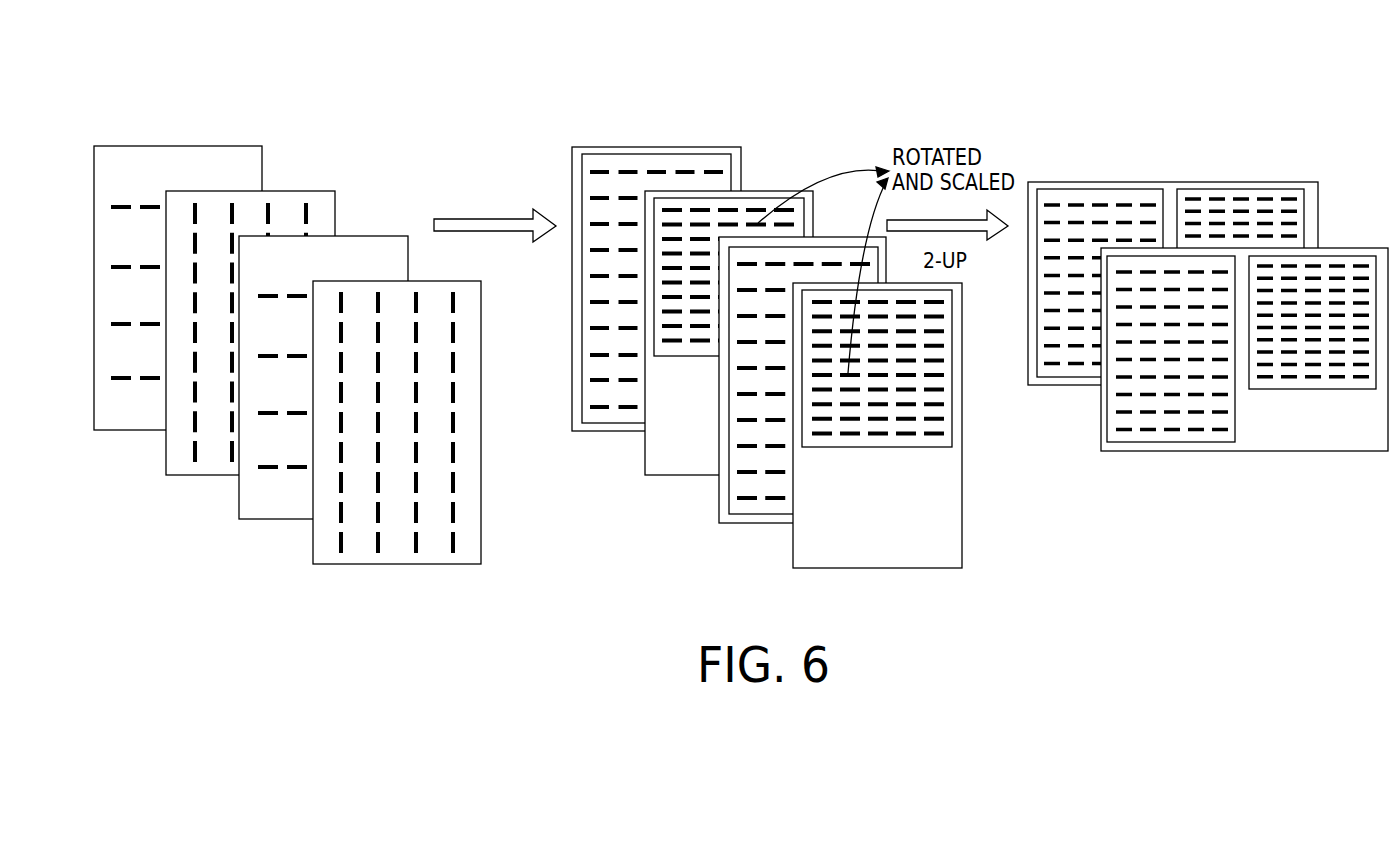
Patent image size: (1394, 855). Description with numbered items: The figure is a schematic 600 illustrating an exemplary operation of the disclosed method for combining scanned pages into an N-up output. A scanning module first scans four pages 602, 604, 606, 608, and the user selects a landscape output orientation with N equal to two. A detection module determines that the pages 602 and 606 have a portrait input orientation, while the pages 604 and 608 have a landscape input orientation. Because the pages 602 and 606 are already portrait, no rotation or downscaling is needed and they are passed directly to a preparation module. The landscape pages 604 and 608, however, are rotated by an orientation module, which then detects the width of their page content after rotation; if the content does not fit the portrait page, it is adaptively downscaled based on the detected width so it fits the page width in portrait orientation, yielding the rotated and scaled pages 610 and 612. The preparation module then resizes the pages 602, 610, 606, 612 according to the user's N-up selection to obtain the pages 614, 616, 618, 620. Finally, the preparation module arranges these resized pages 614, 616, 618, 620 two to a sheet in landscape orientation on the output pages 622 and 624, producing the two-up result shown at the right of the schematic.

The schematic 600 is at (825, 95).
The page 602 is at (122, 431).
The page 604 is at (195, 475).
The page 606 is at (275, 519).
The page 608 is at (481, 512).
The page 610 is at (678, 474).
The page 612 is at (962, 521).
The page 614 is at (1111, 189).
The page 616 is at (1259, 189).
The page 618 is at (1158, 442).
The page 620 is at (1312, 389).
The page 622 is at (1174, 182).
The page 624 is at (1245, 451).